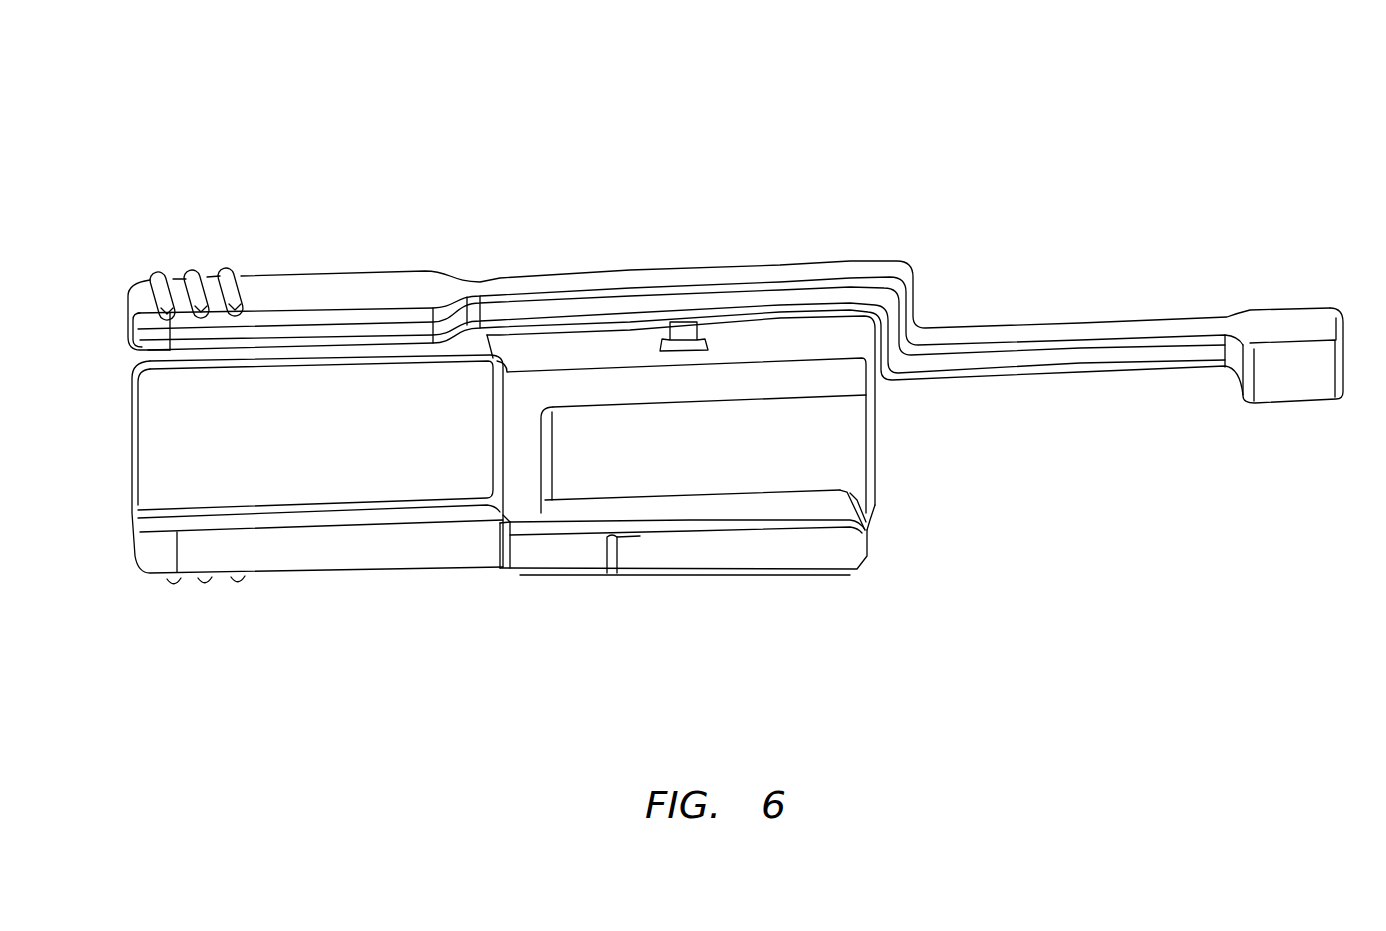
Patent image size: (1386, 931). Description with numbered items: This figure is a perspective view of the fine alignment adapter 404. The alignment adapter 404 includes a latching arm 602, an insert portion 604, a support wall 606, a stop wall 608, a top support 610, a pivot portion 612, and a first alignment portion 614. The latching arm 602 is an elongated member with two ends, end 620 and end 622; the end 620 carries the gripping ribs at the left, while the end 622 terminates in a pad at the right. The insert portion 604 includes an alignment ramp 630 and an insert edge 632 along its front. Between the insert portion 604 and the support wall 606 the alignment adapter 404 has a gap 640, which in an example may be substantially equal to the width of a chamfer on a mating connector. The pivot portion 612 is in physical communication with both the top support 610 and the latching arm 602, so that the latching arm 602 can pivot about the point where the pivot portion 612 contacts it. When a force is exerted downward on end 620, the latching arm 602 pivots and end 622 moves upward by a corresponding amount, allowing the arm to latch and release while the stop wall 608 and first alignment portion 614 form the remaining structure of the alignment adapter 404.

The alignment adapter 404 is at (834, 136).
The latching arm 602 is at (640, 201).
The insert portion 604 is at (752, 503).
The support wall 606 is at (850, 447).
The stop wall 608 is at (527, 458).
The top support 610 is at (762, 377).
The pivot portion 612 is at (691, 330).
The first alignment portion 614 is at (380, 553).
The end 620 is at (229, 276).
The end 622 is at (1257, 319).
The alignment ramp 630 is at (555, 553).
The insert edge 632 is at (662, 553).
The gap 640 is at (858, 491).